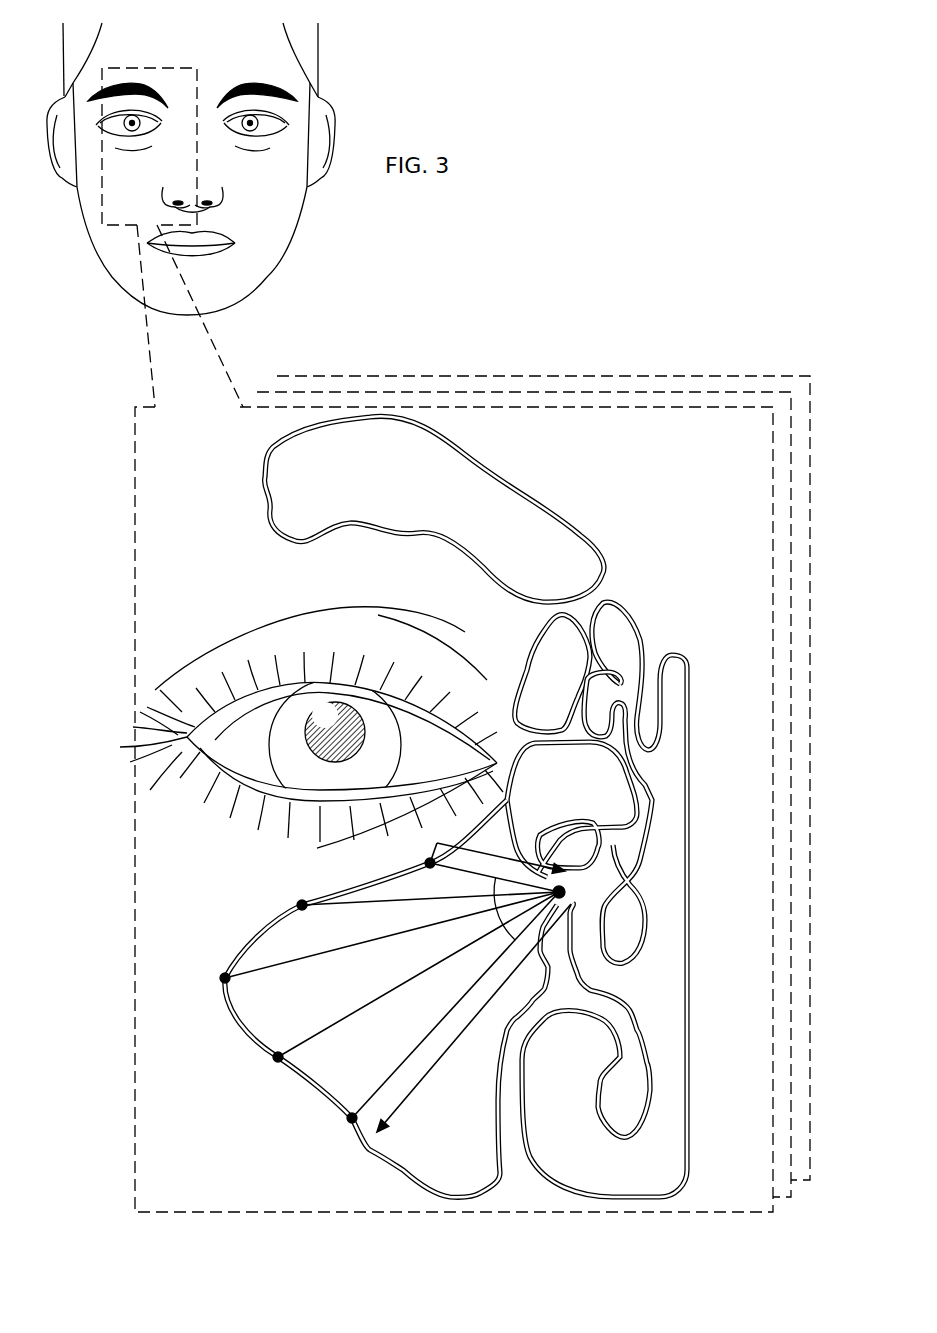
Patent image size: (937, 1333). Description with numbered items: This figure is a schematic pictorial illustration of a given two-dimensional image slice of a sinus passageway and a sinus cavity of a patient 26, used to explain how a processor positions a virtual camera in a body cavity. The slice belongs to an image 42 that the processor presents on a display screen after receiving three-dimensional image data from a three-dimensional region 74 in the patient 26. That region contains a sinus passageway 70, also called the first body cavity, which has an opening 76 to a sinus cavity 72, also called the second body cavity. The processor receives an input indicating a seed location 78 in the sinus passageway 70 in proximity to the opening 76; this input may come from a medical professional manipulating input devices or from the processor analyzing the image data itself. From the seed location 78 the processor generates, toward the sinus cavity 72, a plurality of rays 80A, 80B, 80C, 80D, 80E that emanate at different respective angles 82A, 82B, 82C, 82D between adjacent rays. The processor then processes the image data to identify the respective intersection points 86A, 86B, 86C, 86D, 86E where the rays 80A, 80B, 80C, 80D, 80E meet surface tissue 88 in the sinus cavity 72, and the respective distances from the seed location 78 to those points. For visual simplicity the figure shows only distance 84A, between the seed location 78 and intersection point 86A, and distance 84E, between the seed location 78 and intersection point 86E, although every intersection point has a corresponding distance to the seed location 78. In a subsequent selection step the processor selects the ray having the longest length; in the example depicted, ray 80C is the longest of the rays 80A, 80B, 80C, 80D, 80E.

The patient 26 is at (327, 58).
The image 42 is at (619, 398).
The 3D region 74 is at (697, 372).
The sinus passageway 70 is at (582, 927).
The sinus cavity 72 is at (470, 1172).
The opening 76 is at (605, 860).
The seed location 78 is at (575, 893).
The ray 80A is at (417, 887).
The ray 80B is at (372, 905).
The ray 80C is at (276, 970).
The ray 80D is at (321, 1034).
The ray 80E is at (413, 1050).
The angle 82A is at (492, 888).
The angle 82B is at (493, 902).
The angle 82C is at (500, 925).
The angle 82D is at (500, 940).
The distance 84A is at (512, 830).
The distance 84E is at (423, 1077).
The intersection point 86A is at (425, 863).
The intersection point 86B is at (297, 905).
The intersection point 86C is at (220, 978).
The intersection point 86D is at (273, 1057).
The intersection point 86E is at (347, 1118).
The surface tissue 88 is at (373, 1152).